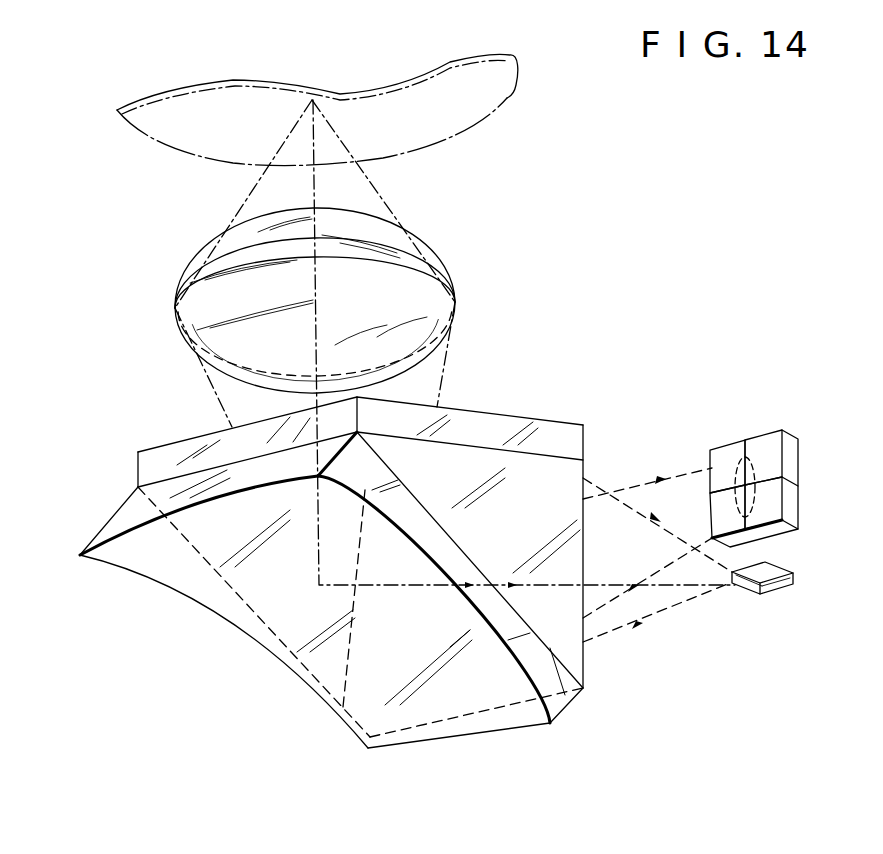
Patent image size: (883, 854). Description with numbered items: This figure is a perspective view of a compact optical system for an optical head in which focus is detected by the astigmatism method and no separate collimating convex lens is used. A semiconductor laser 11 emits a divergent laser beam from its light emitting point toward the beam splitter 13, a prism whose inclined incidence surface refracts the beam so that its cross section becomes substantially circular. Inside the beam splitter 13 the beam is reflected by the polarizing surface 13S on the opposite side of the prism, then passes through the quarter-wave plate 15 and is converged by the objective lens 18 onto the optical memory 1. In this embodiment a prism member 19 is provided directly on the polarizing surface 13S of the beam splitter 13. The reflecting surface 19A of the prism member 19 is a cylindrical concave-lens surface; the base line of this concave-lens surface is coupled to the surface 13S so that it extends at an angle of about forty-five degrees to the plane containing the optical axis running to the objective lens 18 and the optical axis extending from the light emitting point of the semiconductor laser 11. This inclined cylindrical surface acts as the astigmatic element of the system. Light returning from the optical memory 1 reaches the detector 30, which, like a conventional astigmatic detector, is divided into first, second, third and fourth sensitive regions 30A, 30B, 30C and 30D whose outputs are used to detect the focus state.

The optical memory 1 is at (513, 96).
The objective lens 18 is at (455, 302).
The quarter-wave plate 15 is at (514, 423).
The beam splitter 13 is at (568, 633).
The polarizing surface 13S is at (565, 695).
The prism member 19 is at (520, 718).
The reflecting surface 19A is at (253, 622).
The detector 30 is at (788, 458).
The first sensitive region 30A is at (720, 452).
The second sensitive region 30B is at (768, 508).
The third sensitive region 30C is at (765, 443).
The fourth sensitive region 30D is at (722, 508).
The semiconductor laser 11 is at (770, 587).